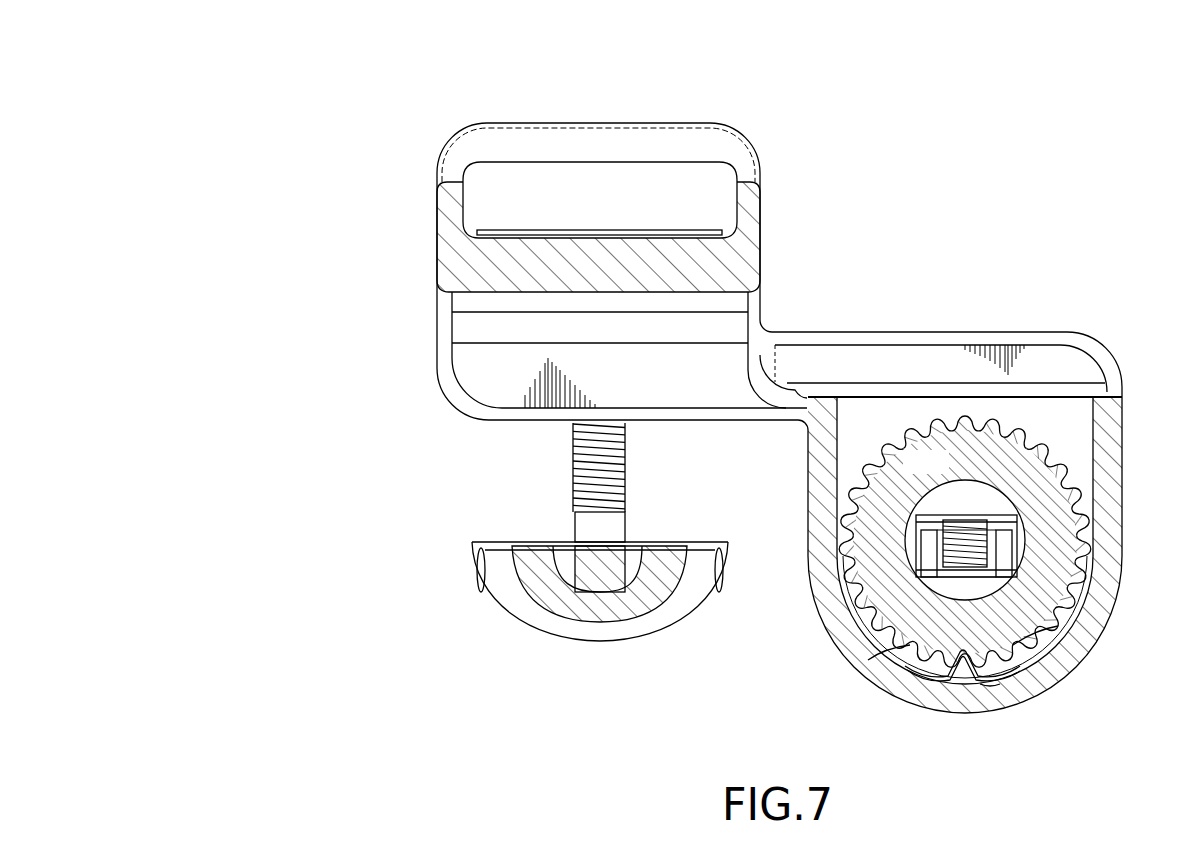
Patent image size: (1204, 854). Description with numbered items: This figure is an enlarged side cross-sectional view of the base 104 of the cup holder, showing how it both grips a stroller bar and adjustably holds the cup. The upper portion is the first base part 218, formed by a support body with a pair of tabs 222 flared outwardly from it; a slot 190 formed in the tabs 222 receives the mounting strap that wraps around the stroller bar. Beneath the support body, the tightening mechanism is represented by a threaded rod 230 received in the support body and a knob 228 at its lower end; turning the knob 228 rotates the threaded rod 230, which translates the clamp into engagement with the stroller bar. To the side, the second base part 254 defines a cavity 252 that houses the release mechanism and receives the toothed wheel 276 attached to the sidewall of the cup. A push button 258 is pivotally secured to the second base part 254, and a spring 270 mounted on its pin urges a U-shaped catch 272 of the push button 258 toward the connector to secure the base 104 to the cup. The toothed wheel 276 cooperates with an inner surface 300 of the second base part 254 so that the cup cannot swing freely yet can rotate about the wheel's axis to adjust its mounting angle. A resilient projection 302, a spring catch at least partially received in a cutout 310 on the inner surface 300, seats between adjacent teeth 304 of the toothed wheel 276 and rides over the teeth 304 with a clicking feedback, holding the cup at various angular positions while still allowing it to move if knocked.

The base 104 is at (322, 366).
The slot 190 is at (533, 187).
The tabs 222 is at (632, 137).
The first base part 218 is at (437, 338).
The threaded rod 230 is at (577, 468).
The knob 228 is at (494, 610).
The cavity 252 is at (867, 440).
The second base part 254 is at (1057, 685).
The push button 258 is at (1010, 479).
The toothed wheel 276 is at (1050, 512).
The spring 270 is at (960, 538).
The catch 272 is at (1040, 532).
The inner surface 300 is at (870, 660).
The projection 302 is at (970, 672).
The teeth 304 is at (1060, 623).
The cutout 310 is at (987, 686).